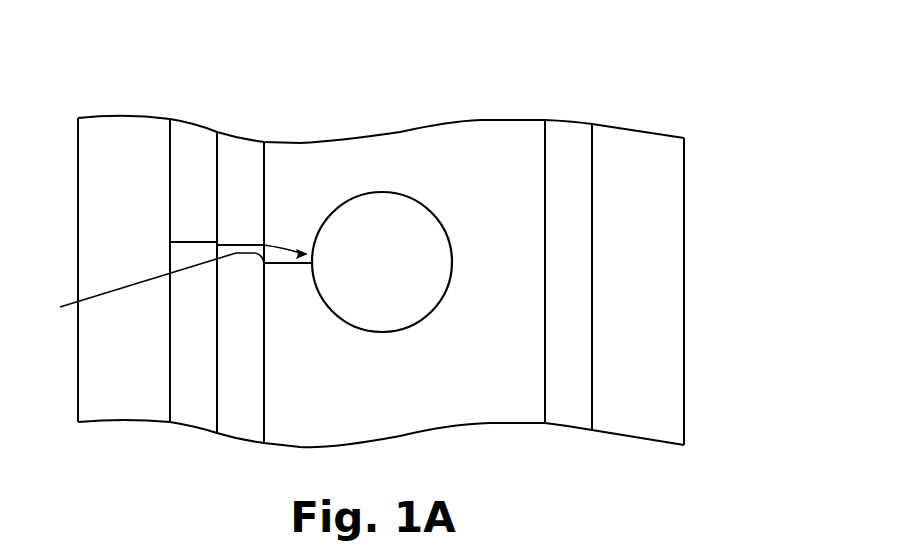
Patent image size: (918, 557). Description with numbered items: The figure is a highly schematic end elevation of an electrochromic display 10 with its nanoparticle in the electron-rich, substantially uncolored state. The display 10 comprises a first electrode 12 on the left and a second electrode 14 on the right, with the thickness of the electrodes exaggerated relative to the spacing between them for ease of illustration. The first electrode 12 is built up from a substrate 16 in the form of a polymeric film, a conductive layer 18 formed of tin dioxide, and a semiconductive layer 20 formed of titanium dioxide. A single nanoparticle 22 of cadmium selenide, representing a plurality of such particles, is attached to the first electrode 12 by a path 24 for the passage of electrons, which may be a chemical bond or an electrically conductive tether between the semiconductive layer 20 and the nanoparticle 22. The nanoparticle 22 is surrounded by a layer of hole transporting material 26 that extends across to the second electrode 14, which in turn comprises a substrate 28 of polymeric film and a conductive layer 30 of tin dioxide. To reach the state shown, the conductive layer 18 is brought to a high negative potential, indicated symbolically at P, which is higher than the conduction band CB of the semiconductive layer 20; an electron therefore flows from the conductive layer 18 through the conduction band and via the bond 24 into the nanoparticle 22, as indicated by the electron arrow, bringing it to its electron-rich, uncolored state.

The electrochromic display 10 is at (754, 277).
The first electrode 12 is at (160, 88).
The second electrode 14 is at (585, 100).
The substrate 16 is at (135, 270).
The conductive layer 18 is at (190, 152).
The semiconductive layer 20 is at (248, 172).
The nanoparticle 22 is at (382, 262).
The path for passage of electrons 24 is at (283, 265).
The hole transporting material 26 is at (390, 372).
The substrate 28 is at (660, 190).
The conductive layer 30 is at (566, 153).